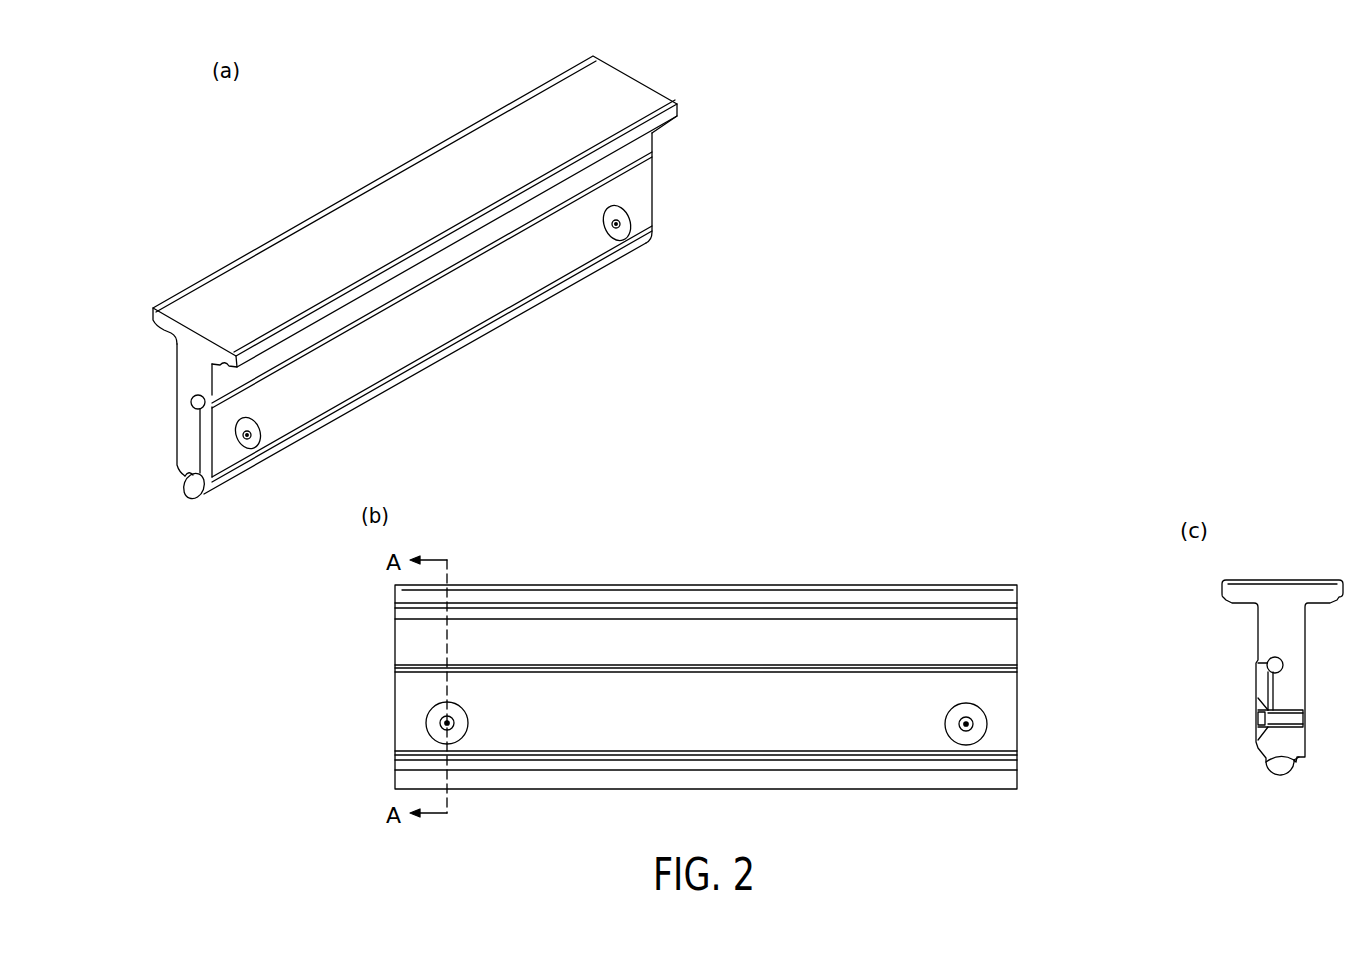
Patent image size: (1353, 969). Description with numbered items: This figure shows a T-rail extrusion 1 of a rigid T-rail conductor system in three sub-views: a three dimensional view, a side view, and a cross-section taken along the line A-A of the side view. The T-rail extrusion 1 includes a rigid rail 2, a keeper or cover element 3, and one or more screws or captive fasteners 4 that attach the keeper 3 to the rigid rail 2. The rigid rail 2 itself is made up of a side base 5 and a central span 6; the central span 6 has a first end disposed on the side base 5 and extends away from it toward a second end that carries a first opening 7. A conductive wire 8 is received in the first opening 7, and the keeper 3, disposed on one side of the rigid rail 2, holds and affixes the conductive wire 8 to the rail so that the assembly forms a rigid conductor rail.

The T-rail extrusion 1 is at (436, 94).
The rigid rail 2 is at (492, 108).
The keeper 3 is at (497, 298).
The screws 4 is at (616, 232).
The side base 5 is at (405, 201).
The central span 6 is at (187, 415).
The first opening 7 is at (186, 475).
The conductive wire 8 is at (196, 496).